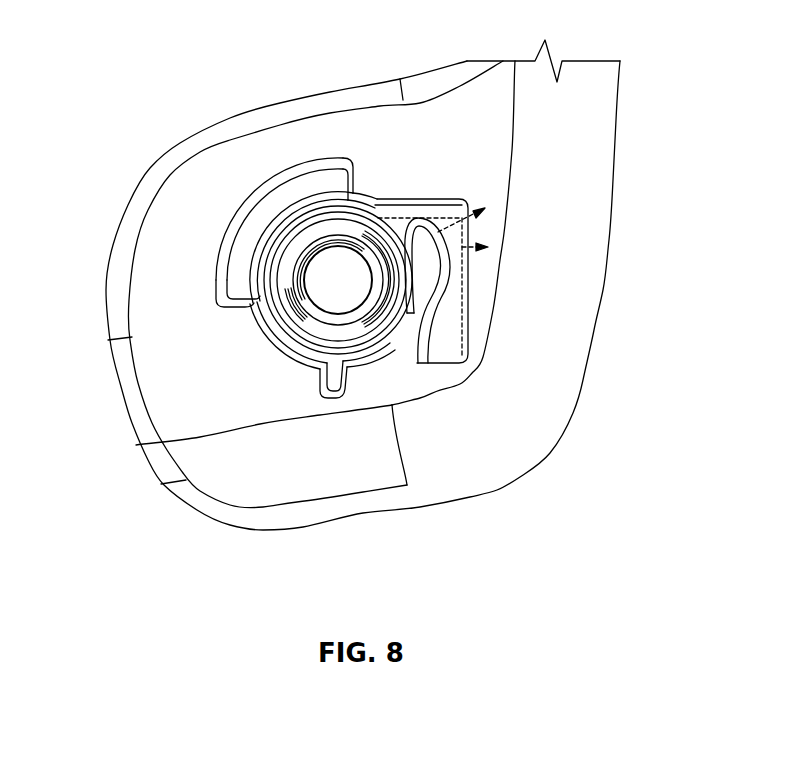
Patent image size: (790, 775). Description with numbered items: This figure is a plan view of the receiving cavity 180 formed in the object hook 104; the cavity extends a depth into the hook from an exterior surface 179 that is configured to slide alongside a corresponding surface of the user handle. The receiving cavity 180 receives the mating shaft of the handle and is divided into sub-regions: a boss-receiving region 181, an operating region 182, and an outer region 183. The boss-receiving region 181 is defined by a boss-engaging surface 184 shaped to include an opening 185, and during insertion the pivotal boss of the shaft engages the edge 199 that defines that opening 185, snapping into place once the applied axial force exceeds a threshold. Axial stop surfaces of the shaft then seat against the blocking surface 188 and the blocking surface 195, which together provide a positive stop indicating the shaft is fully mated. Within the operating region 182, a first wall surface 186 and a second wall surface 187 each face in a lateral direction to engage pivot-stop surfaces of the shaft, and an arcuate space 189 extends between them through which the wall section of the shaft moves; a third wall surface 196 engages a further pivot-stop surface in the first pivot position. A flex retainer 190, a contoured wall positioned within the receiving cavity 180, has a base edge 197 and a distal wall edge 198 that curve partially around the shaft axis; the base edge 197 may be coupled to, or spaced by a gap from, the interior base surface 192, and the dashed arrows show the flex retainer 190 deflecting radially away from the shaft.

The object hook 104 is at (572, 351).
The exterior surface 179 is at (470, 156).
The receiving cavity 180 is at (470, 242).
The boss-receiving region 181 is at (305, 296).
The operating region 182 is at (283, 220).
The outer region 183 is at (400, 357).
The boss-engaging surface 184 is at (325, 262).
The opening 185 is at (322, 306).
The first wall surface 186 is at (346, 172).
The second wall surface 187 is at (233, 296).
The blocking surface 188 is at (291, 190).
The arcuate space 189 is at (240, 232).
The flex retainer 190 is at (443, 276).
The interior base surface 192 is at (395, 217).
The blocking surface 195 is at (353, 382).
The third wall surface 196 is at (306, 393).
The base edge 197 is at (378, 217).
The distal wall edge 198 is at (437, 237).
The edge 199 is at (353, 320).